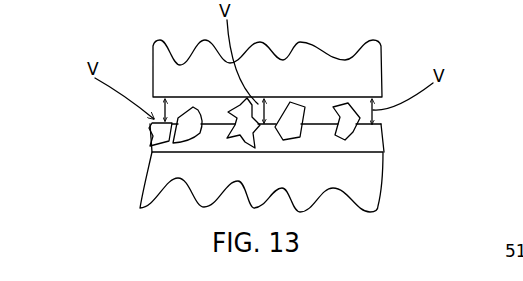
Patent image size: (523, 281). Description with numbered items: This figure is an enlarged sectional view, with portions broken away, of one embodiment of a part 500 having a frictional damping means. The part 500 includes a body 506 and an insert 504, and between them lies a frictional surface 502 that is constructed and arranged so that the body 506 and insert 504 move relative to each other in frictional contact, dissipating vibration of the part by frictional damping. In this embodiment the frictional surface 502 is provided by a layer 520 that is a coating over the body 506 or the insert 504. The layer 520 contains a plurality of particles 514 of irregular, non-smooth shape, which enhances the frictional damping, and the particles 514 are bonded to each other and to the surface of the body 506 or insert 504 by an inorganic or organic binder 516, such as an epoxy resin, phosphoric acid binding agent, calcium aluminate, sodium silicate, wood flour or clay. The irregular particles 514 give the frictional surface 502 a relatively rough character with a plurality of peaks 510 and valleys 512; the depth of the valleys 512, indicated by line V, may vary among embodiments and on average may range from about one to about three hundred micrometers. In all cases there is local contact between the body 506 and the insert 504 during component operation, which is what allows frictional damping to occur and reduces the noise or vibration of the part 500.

The part 500 is at (117, 47).
The frictional surfaces 502 is at (322, 106).
The insert 504 is at (163, 175).
The body 506 is at (362, 75).
The peaks 510 is at (249, 97).
The valleys 512 is at (160, 111).
The particles 514 is at (350, 127).
The binder 516 is at (152, 147).
The layer 520 is at (136, 132).